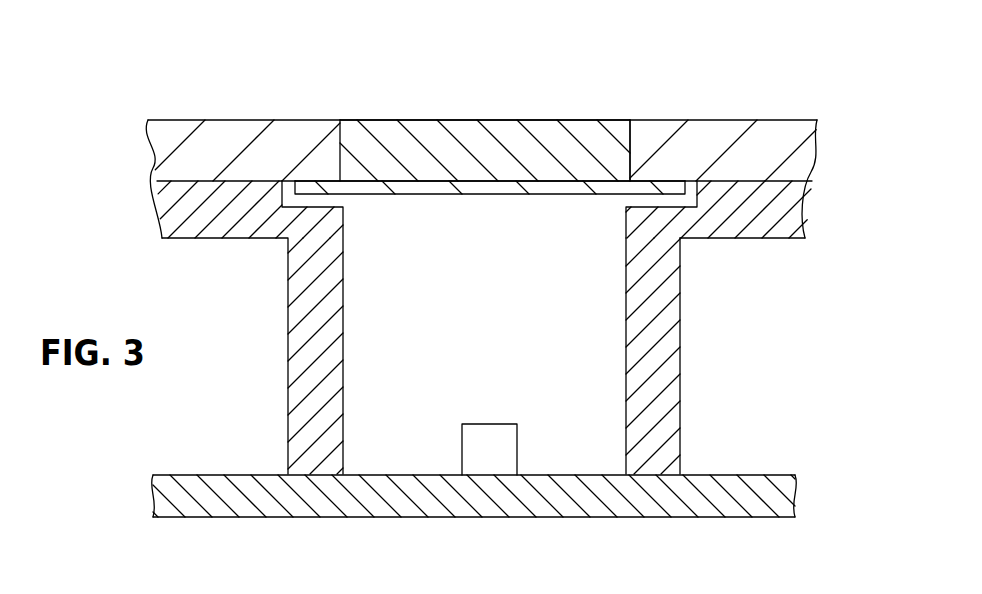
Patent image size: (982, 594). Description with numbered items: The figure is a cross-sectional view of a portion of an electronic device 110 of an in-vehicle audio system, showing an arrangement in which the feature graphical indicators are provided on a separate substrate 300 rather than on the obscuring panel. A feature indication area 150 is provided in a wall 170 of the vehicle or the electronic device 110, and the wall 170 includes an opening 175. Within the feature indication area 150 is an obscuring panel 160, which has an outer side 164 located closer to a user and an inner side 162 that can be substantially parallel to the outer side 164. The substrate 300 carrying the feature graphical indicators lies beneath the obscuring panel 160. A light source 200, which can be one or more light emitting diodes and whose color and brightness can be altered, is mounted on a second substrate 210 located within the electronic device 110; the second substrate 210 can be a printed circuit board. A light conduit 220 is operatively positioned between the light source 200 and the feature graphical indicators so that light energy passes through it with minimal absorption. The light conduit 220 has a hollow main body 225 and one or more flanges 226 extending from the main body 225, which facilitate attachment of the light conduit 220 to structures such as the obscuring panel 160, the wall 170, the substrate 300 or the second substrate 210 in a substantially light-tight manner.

The electronic device 110 is at (178, 85).
The feature indication area 150 is at (515, 82).
The obscuring panel 160 is at (441, 147).
The outer side 164 is at (373, 120).
The opening 175 is at (627, 143).
The wall 170 is at (793, 148).
The inner side 162 is at (435, 194).
The substrate 300 is at (548, 188).
The light conduit 220 is at (683, 297).
The main body 225 is at (668, 340).
The flange 226 is at (760, 231).
The light source 200 is at (490, 424).
The second substrate 210 is at (680, 510).